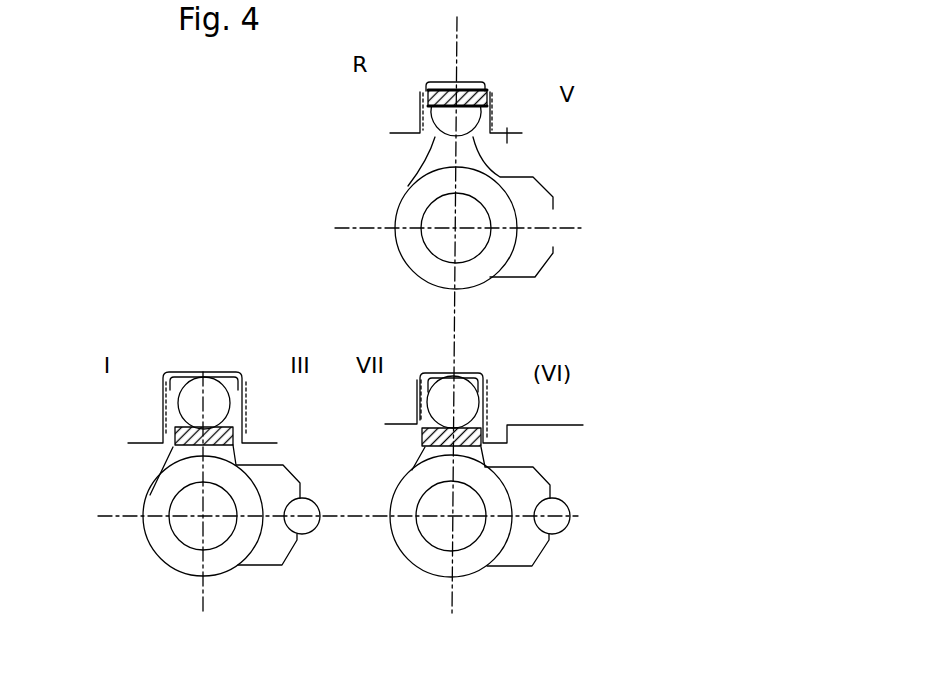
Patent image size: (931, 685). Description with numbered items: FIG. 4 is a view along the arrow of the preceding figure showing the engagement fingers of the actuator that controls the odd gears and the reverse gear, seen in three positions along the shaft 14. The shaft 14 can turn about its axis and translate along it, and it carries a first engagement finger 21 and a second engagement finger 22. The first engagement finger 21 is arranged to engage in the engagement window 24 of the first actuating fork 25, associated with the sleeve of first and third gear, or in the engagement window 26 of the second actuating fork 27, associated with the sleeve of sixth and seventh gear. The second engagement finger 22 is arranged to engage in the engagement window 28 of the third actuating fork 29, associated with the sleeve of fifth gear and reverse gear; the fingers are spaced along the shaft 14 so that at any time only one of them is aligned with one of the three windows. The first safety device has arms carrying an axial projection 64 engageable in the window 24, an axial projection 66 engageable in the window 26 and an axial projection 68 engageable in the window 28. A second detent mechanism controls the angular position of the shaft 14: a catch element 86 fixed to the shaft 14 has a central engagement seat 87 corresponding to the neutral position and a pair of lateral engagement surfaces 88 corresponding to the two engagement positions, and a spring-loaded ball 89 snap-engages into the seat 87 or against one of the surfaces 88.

The shaft 14 is at (408, 210).
The first engagement finger 21 is at (190, 388).
The second engagement finger 22 is at (421, 129).
The engagement window 24 is at (176, 423).
The first actuating fork 25 is at (137, 423).
The engagement window 26 is at (428, 418).
The second actuating fork 27 is at (510, 410).
The engagement window 28 is at (434, 133).
The third actuating fork 29 is at (508, 142).
The axial projection 64 is at (237, 441).
The axial projection 66 is at (484, 445).
The axial projection 68 is at (467, 89).
The catch element 86 is at (263, 548).
The central engagement seat 87 is at (300, 538).
The lateral engagement surfaces 88 is at (292, 473).
The ball 89 is at (311, 531).